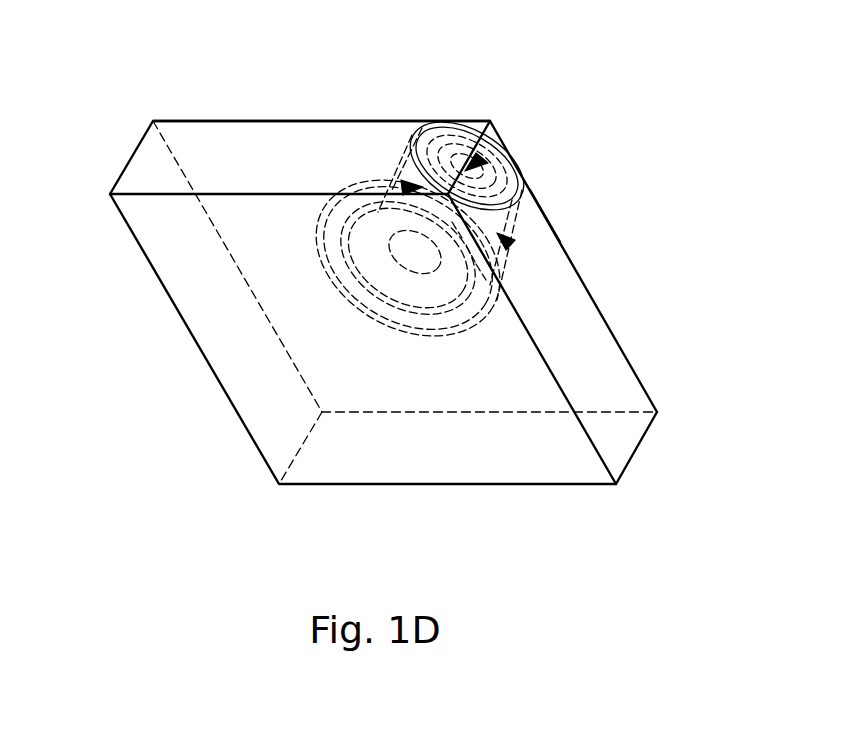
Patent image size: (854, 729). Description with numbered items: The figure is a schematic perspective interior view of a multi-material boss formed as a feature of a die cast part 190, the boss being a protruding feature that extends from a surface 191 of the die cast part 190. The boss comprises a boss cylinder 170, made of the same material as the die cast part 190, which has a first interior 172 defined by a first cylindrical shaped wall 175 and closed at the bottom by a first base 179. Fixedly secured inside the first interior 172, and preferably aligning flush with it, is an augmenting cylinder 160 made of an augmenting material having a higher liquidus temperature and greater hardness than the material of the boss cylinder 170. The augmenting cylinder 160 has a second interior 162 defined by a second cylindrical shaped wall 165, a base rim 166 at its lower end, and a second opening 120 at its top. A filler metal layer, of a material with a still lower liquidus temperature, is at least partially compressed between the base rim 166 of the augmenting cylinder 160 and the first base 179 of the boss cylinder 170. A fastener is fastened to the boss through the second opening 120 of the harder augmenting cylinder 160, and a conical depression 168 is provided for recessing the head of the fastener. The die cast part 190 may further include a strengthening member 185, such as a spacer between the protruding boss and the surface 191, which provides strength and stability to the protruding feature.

The second opening 120 is at (486, 160).
The augmenting cylinder 160 is at (528, 188).
The second interior 162 is at (400, 187).
The second cylindrical shaped wall 165 is at (414, 135).
The base rim 166 is at (445, 275).
The conical depression 168 is at (478, 122).
The boss cylinder 170 is at (397, 163).
The first interior 172 is at (512, 244).
The first cylindrical shaped wall 175 is at (353, 190).
The first base 179 is at (413, 250).
The strengthening member 185 is at (350, 283).
The die cast part 190 is at (647, 430).
The surface 191 is at (193, 121).